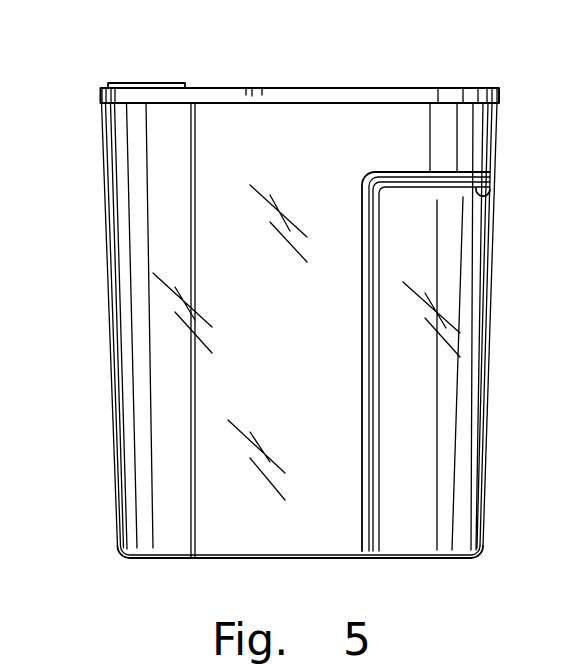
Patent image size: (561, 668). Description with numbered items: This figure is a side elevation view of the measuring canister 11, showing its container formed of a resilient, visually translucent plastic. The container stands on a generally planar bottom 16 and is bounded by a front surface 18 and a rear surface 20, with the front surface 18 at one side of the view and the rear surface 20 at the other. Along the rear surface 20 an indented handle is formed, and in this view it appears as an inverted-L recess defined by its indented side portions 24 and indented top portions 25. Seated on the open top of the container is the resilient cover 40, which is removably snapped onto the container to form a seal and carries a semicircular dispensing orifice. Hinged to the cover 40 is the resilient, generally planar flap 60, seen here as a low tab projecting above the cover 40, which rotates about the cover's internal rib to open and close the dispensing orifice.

The measuring canister 11 is at (278, 321).
The bottom 16 is at (407, 558).
The front surface 18 is at (113, 426).
The rear surface 20 is at (487, 358).
The indented side portions 24 is at (470, 248).
The indented top portions 25 is at (492, 193).
The cover 40 is at (362, 97).
The flap 60 is at (143, 83).